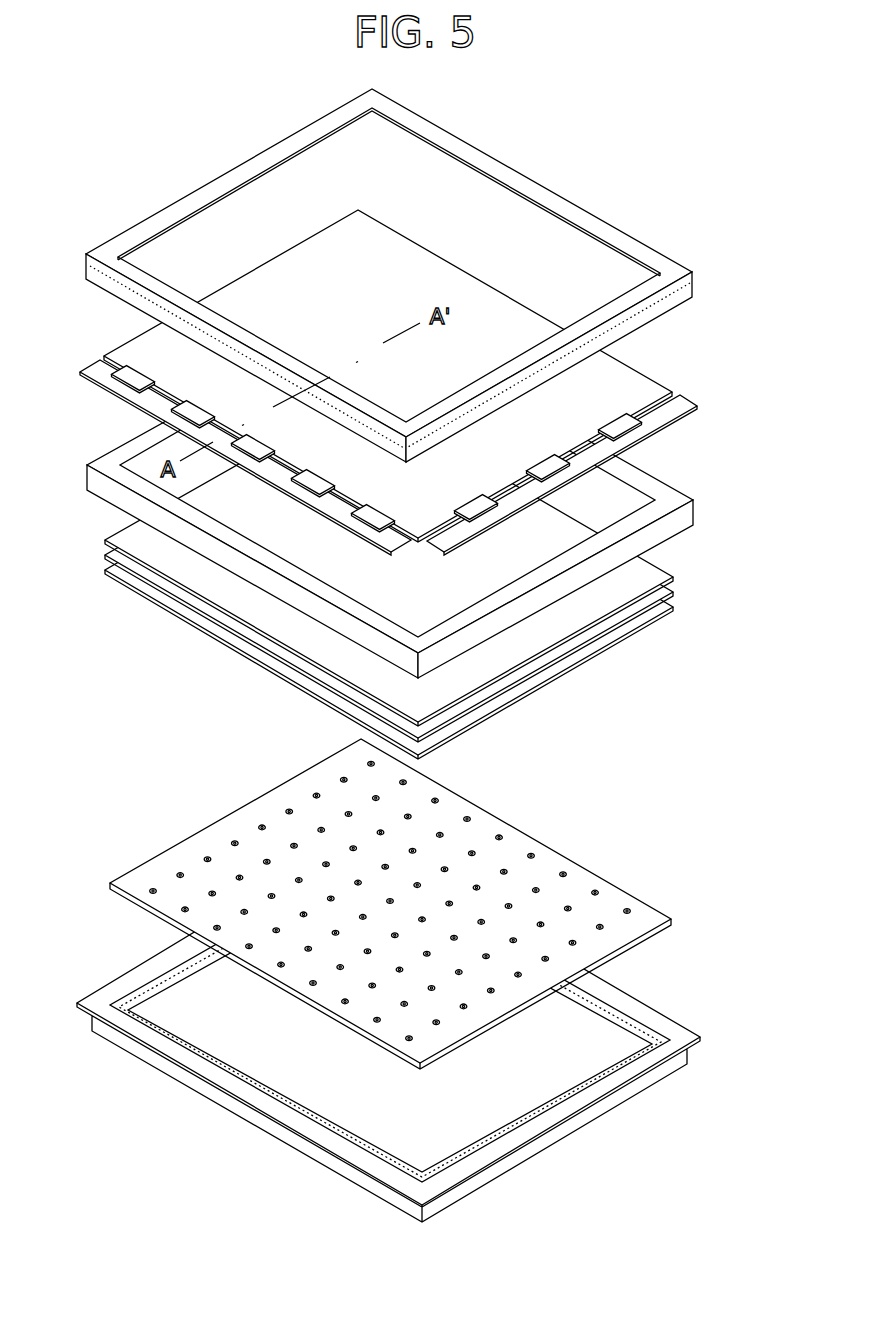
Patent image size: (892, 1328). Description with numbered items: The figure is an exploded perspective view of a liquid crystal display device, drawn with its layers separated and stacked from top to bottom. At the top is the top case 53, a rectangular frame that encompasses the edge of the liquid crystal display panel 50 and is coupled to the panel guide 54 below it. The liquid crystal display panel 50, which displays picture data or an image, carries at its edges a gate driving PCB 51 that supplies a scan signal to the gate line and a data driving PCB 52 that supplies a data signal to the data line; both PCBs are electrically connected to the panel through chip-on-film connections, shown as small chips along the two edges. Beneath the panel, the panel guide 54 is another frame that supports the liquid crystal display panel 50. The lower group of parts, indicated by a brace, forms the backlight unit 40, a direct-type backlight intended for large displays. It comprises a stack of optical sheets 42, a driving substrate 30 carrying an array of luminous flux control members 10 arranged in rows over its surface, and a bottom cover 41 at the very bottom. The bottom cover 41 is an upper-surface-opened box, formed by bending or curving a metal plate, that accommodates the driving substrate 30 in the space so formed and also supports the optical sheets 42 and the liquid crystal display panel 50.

The luminous flux control member 10 is at (176, 856).
The driving substrate 30 is at (390, 903).
The backlight unit 40 is at (426, 655).
The bottom cover 41 is at (660, 992).
The optical sheets 42 is at (678, 577).
The liquid crystal display panel 50 is at (616, 368).
The gate driving PCB 51 is at (562, 475).
The data driving PCB 52 is at (245, 457).
The top case 53 is at (694, 289).
The panel guide 54 is at (674, 498).